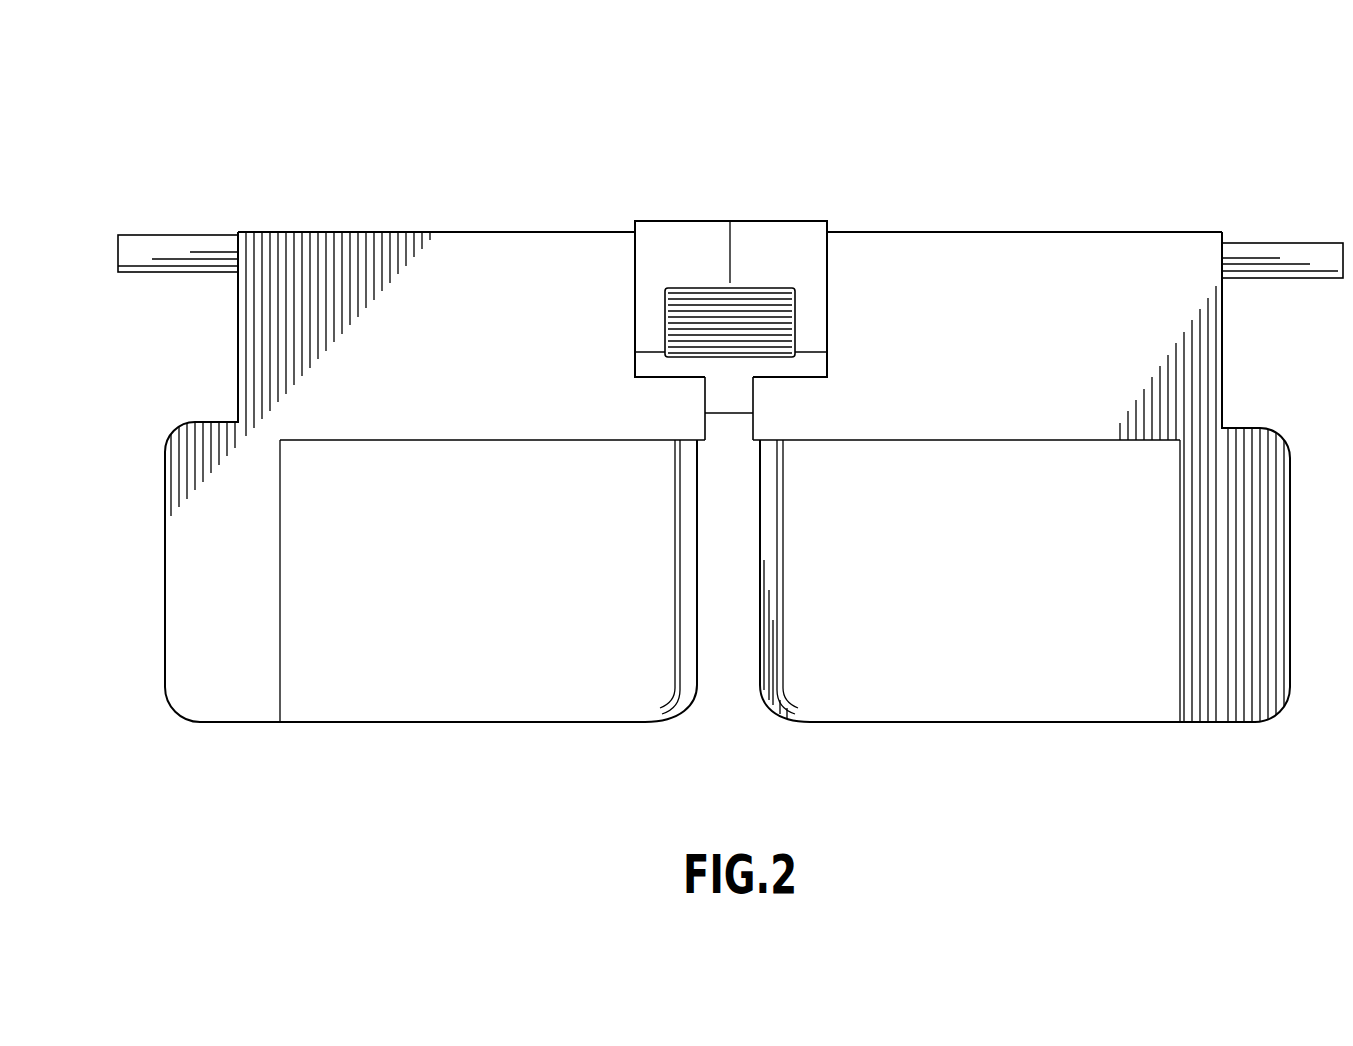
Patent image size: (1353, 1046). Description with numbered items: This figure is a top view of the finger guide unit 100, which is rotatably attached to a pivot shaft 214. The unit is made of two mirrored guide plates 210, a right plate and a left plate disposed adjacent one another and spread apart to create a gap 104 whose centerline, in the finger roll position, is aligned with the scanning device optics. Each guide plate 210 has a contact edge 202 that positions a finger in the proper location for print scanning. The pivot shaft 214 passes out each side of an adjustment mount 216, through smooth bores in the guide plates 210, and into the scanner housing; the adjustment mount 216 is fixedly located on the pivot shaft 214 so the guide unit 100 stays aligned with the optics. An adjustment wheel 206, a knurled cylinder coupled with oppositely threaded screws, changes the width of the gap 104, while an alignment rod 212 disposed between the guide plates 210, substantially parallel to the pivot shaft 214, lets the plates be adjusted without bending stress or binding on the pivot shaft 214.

The finger guide unit 100 is at (352, 190).
The guide plates 210 is at (532, 225).
The adjustment mount 216 is at (730, 210).
The adjustment wheel 206 is at (762, 338).
The pivot shaft 214 is at (1257, 257).
The alignment rod 212 is at (727, 433).
The contact edge 202 is at (687, 713).
The gap 104 is at (742, 693).